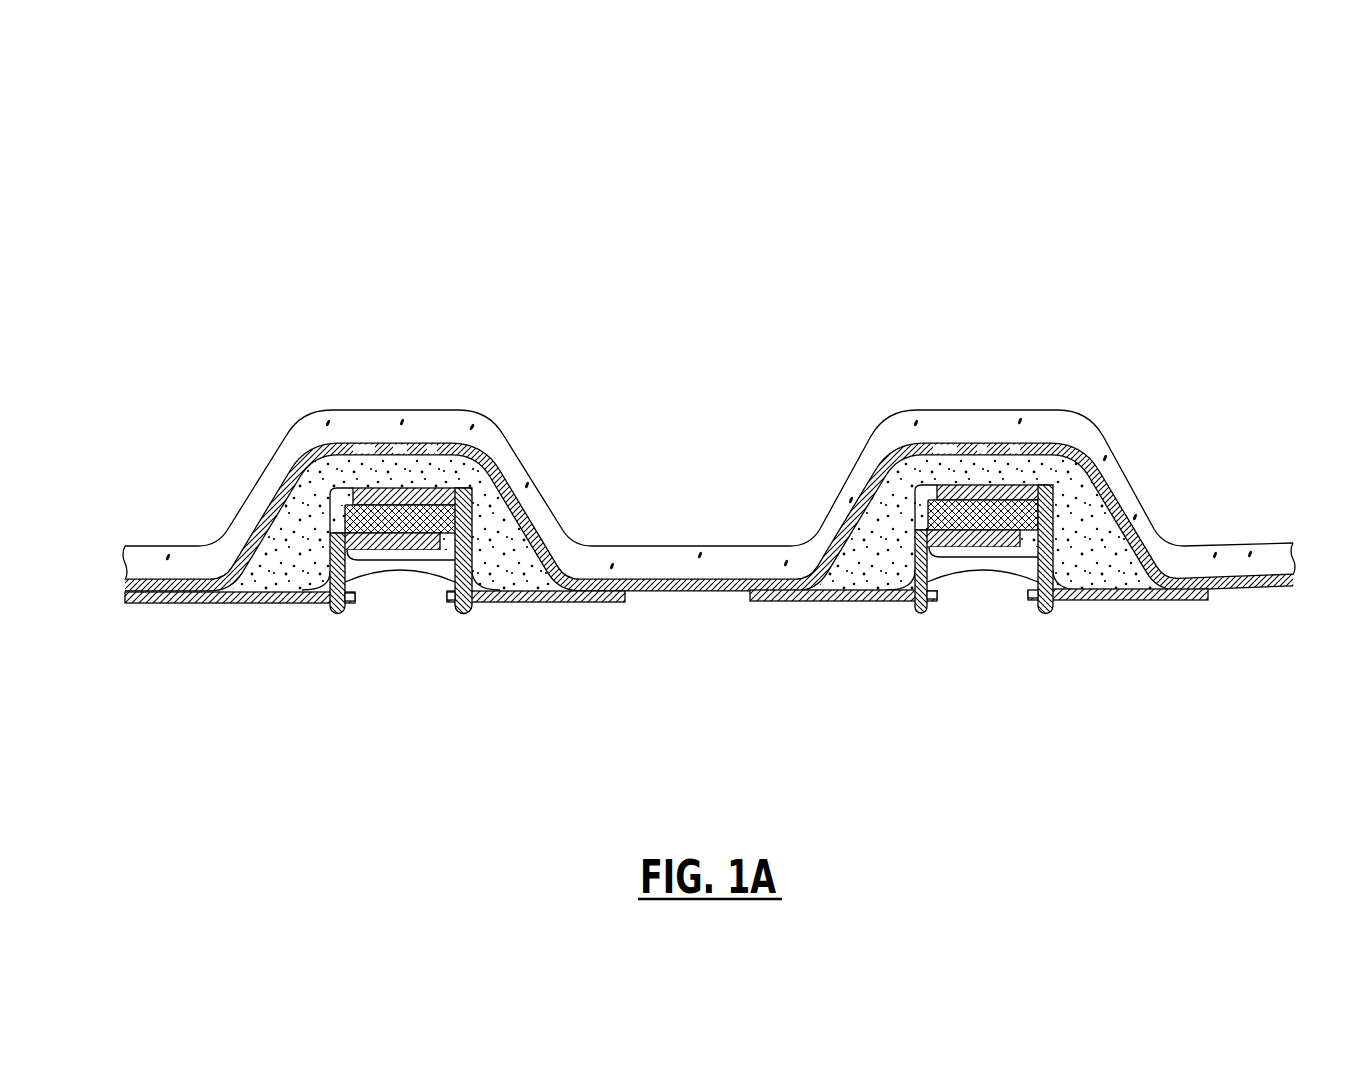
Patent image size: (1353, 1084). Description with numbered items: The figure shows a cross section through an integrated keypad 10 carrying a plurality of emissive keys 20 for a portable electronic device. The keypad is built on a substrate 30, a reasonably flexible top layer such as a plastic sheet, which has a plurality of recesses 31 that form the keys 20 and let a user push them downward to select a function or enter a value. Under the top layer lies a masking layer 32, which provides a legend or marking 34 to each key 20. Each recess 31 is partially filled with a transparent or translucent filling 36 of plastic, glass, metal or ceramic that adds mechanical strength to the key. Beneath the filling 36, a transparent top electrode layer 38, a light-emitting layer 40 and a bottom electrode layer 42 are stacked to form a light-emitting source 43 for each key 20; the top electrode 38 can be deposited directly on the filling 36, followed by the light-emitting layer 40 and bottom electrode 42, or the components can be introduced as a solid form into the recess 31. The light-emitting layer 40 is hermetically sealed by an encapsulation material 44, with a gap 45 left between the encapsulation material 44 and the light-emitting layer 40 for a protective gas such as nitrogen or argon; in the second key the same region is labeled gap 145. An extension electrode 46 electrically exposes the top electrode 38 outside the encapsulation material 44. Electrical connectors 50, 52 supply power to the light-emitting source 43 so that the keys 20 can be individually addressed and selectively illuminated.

The integrated keypad 10 is at (800, 222).
The emissive key 20 is at (497, 378).
The substrate 30 is at (557, 528).
The recess 31 is at (298, 428).
The masking layer 32 is at (852, 525).
The marking 34 is at (965, 440).
The filling 36 is at (488, 502).
The top electrode layer 38 is at (430, 490).
The light-emitting layer 40 is at (343, 517).
The bottom electrode layer 42 is at (333, 604).
The light-emitting source 43 is at (385, 642).
The encapsulation material 44 is at (377, 570).
The gap 45 is at (403, 568).
The adhesive layer 145 is at (997, 565).
The extension electrode 46 is at (447, 587).
The electrical connector 50 is at (252, 603).
The electrical connector 52 is at (533, 603).